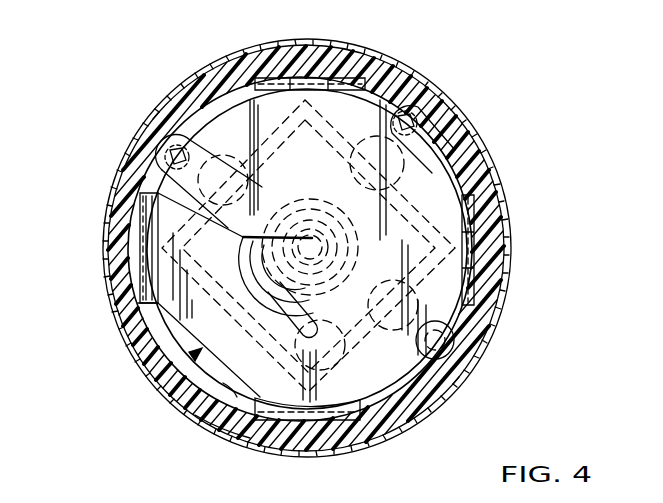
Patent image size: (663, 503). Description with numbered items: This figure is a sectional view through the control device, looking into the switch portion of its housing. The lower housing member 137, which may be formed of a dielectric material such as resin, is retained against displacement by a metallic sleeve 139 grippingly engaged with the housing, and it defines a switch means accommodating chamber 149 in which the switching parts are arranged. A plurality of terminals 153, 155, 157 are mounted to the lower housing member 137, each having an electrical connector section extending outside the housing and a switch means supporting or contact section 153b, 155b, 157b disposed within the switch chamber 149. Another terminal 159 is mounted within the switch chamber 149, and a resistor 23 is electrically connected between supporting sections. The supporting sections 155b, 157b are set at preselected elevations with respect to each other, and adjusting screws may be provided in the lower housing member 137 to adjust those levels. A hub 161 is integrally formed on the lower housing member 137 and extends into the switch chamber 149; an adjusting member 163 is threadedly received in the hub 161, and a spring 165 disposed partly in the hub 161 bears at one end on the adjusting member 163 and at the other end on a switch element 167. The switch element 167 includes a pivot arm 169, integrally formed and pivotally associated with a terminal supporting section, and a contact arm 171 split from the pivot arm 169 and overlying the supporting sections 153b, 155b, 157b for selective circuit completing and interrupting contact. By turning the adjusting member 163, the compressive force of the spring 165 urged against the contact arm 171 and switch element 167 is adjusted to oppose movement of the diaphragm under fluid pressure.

The resistor 23 is at (449, 397).
The lower housing member 137 is at (401, 78).
The metallic sleeve 139 is at (440, 97).
The switch means accommodating chamber 149 is at (203, 422).
The terminal 153 is at (122, 214).
The switch means supporting section 153b is at (122, 292).
The terminal 155 is at (488, 200).
The switch means supporting section 155b is at (446, 142).
The terminal 157 is at (357, 62).
The switch means supporting section 157b is at (227, 126).
The terminal 159 is at (241, 445).
The hub 161 is at (240, 270).
The adjusting member 163 is at (297, 312).
The spring 165 is at (277, 290).
The switch element 167 is at (202, 348).
The pivot arm 169 is at (217, 393).
The contact arm 171 is at (234, 76).